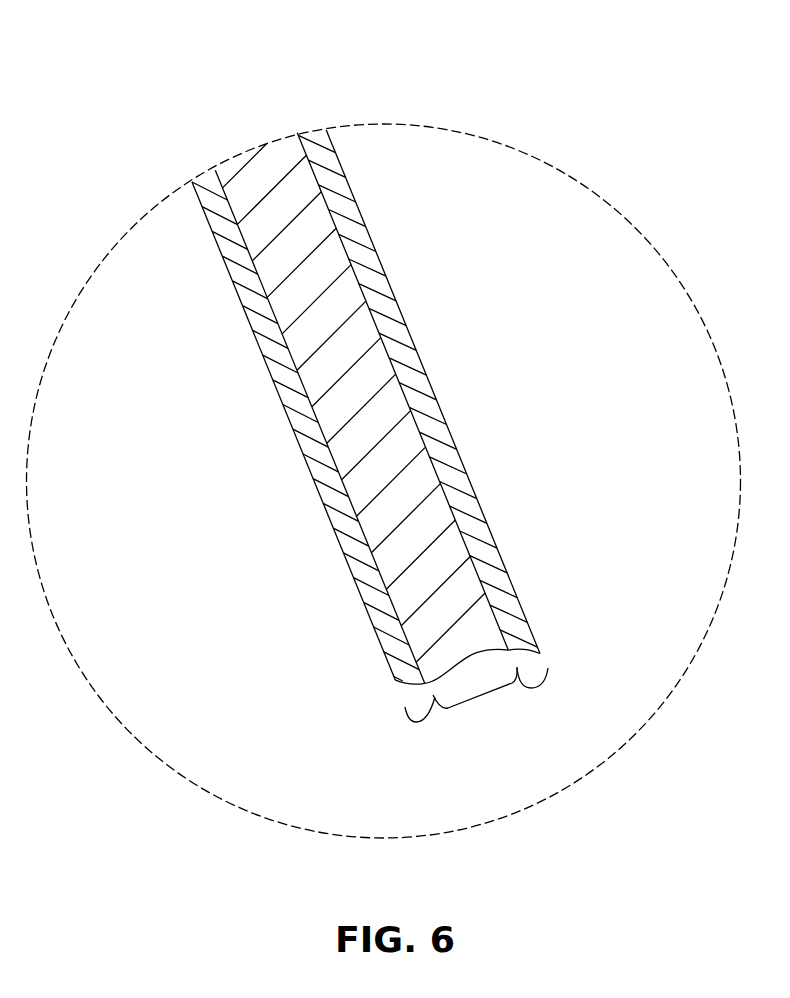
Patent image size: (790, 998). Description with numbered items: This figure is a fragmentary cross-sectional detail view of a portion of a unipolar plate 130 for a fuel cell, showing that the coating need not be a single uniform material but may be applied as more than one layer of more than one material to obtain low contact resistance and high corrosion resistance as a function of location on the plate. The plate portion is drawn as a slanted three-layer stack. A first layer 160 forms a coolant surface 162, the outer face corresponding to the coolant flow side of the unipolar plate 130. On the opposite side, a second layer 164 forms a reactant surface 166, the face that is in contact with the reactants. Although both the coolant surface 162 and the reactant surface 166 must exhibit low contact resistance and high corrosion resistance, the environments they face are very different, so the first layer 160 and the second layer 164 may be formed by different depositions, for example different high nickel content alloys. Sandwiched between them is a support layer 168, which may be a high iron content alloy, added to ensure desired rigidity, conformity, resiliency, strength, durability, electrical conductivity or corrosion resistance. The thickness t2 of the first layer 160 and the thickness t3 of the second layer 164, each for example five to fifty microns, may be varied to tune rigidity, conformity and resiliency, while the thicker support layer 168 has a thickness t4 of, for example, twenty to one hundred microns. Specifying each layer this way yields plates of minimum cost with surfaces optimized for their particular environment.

The unipolar plate 130 is at (237, 84).
The first layer 160 is at (363, 257).
The coolant surface 162 is at (418, 353).
The second layer 164 is at (320, 472).
The reactant surface 166 is at (338, 542).
The support layer 168 is at (435, 615).
The thickness of first layer t2 is at (540, 688).
The thickness of second layer t3 is at (428, 722).
The thickness of support layer t4 is at (482, 698).